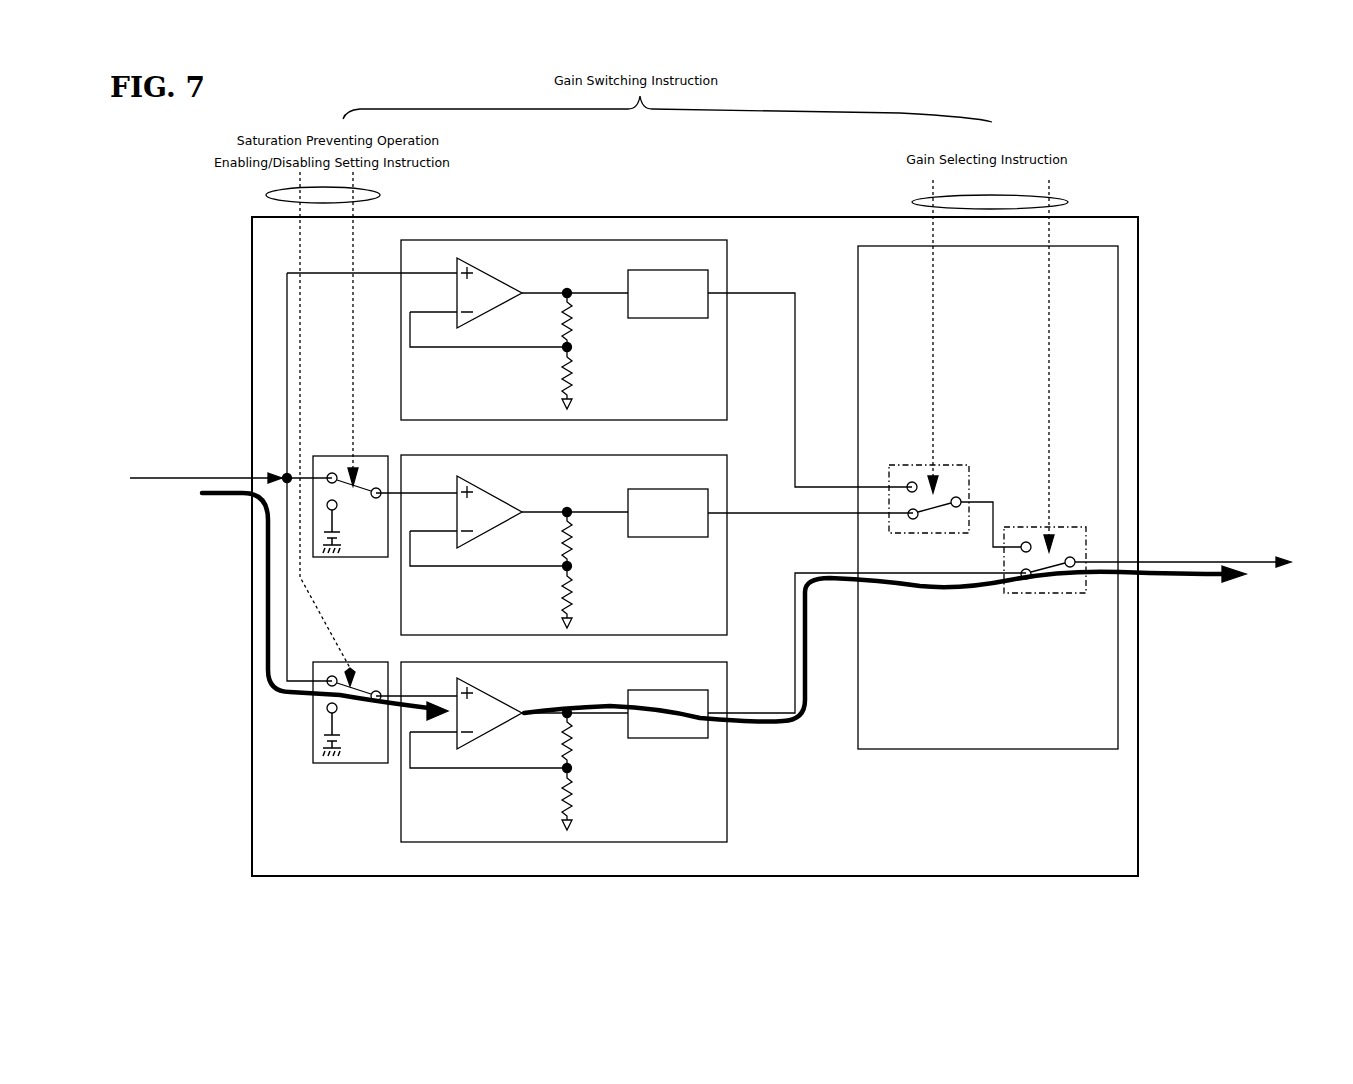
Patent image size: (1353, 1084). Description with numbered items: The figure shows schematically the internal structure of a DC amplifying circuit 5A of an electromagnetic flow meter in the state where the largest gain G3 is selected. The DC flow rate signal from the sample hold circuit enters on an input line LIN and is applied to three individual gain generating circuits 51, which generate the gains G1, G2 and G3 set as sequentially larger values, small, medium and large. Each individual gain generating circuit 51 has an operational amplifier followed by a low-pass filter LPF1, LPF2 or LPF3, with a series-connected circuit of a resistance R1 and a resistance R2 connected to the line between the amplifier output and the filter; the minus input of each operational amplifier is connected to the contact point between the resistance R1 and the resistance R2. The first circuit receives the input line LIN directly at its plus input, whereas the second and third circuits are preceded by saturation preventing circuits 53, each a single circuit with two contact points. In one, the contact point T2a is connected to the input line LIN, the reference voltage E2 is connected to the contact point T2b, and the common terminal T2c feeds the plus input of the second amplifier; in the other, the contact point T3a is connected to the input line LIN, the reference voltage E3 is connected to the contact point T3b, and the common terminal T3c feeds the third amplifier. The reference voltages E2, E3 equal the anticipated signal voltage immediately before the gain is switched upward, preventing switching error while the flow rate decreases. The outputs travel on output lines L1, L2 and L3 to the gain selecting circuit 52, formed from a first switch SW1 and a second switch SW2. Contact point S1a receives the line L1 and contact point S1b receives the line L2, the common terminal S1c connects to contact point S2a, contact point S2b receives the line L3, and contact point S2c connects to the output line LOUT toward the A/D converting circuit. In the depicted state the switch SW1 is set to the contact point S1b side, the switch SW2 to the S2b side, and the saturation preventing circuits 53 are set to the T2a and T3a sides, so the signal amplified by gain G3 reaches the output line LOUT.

The DC amplifying circuit 5A is at (1138, 849).
The individual gain generating circuit 51 is at (768, 258).
The gain selecting circuit 52 is at (985, 749).
The saturation preventing circuit 53 is at (375, 557).
The gain of first individual gain generating circuit G1 is at (515, 328).
The gain of second individual gain generating circuit G2 is at (515, 547).
The gain of third individual gain generating circuit G3 is at (515, 748).
The resistance R1 is at (603, 322).
The resistance R2 is at (603, 378).
The low-pass filter LPF1 is at (670, 320).
The low-pass filter LPF2 is at (670, 539).
The low-pass filter LPF3 is at (670, 740).
The output line L1 is at (818, 481).
The output line L2 is at (833, 517).
The output line L3 is at (831, 577).
The contact point T2a is at (331, 465).
The contact point T2b is at (327, 507).
The common terminal T2c is at (384, 468).
The contact point T3a is at (329, 668).
The contact point T3b is at (328, 712).
The common terminal T3c is at (384, 672).
The reference voltage E2 is at (346, 531).
The reference voltage E3 is at (346, 734).
The first switch SW1 is at (937, 493).
The second switch SW2 is at (1048, 552).
The contact point S1a is at (908, 480).
The contact point S1b is at (909, 518).
The common terminal S1c is at (956, 507).
The contact point S2a is at (1022, 542).
The contact point S2b is at (1021, 580).
The contact point S2c is at (1070, 567).
The input line LIN is at (200, 481).
The output line LOUT is at (1200, 535).